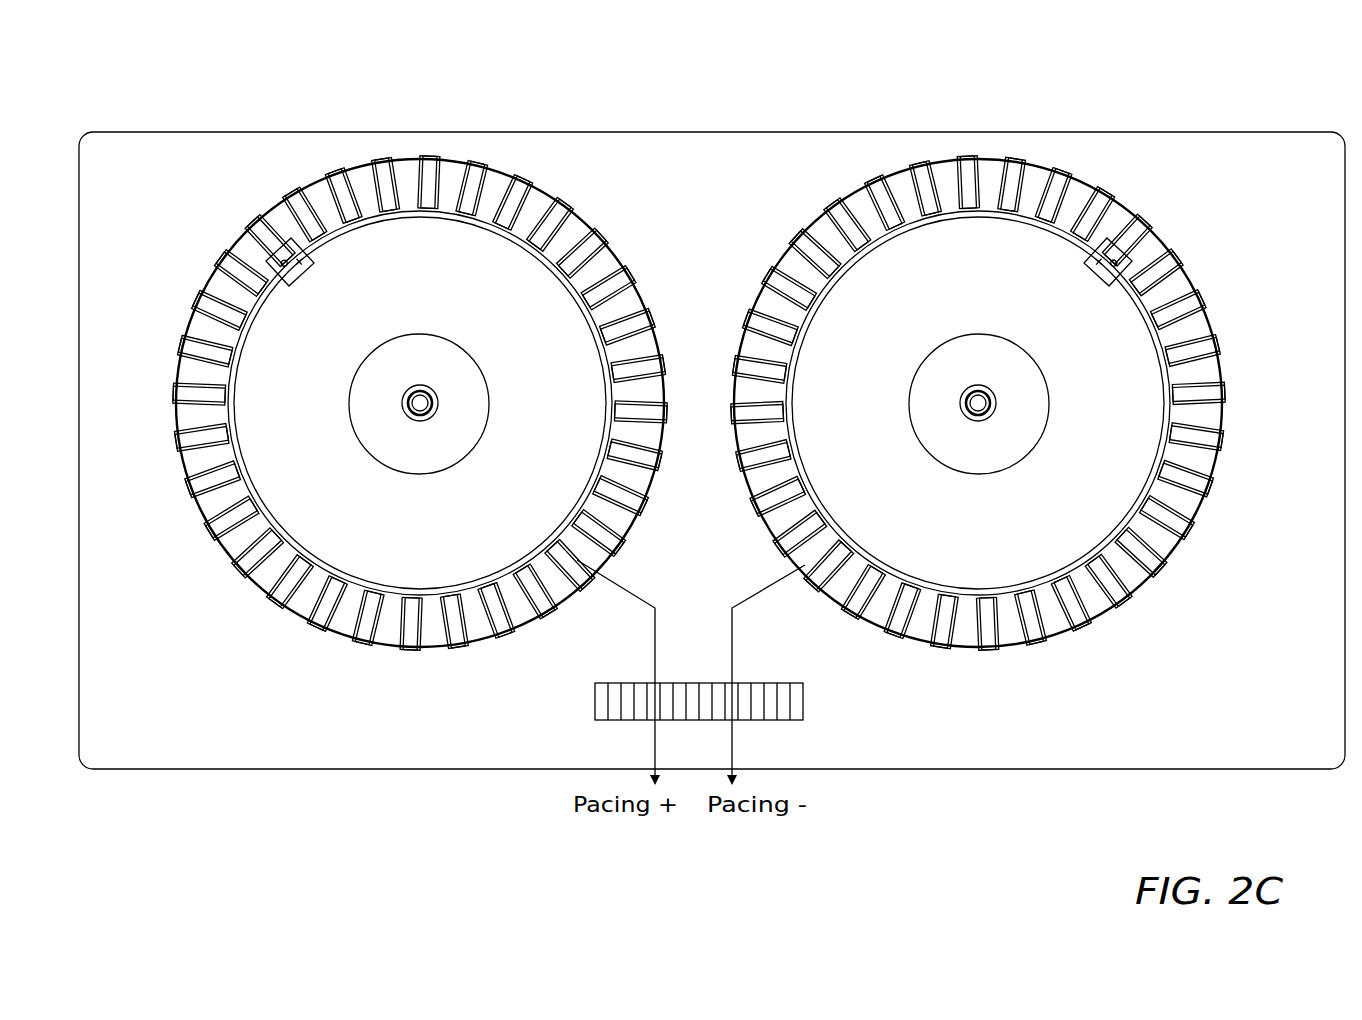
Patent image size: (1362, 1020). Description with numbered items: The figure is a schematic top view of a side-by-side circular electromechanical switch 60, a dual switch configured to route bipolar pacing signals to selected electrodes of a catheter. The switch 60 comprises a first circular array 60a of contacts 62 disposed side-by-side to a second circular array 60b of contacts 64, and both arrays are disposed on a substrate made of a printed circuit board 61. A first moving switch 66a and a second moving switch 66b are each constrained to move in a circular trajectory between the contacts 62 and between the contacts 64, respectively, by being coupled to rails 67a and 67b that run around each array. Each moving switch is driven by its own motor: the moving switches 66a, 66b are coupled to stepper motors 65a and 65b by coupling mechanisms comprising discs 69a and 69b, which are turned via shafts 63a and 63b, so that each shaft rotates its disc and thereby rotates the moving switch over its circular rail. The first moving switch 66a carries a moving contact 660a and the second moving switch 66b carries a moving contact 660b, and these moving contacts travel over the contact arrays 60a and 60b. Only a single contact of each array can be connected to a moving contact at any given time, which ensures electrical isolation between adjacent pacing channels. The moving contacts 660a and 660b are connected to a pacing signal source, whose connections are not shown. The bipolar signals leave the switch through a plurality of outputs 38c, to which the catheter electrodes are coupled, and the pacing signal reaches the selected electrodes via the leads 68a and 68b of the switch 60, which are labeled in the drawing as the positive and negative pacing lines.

The side-by-side circular electromechanical switch 60 is at (1300, 106).
The printed circuit board 61 is at (1319, 753).
The first circular array 60a is at (648, 226).
The second circular array 60b is at (760, 226).
The contacts 62 is at (188, 488).
The contacts 64 is at (1210, 488).
The shaft 63a is at (403, 392).
The shaft 63b is at (992, 392).
The stepper motor 65a is at (462, 380).
The stepper motor 65b is at (936, 380).
The first moving switch 66a is at (290, 243).
The second moving switch 66b is at (1108, 242).
The moving contact 660a is at (274, 262).
The moving contact 660b is at (1126, 262).
The rail 67a is at (248, 290).
The rail 67b is at (1150, 290).
The lead 68a is at (620, 595).
The lead 68b is at (764, 594).
The disc 69a is at (360, 565).
The disc 69b is at (1038, 565).
The outputs 38c is at (594, 707).